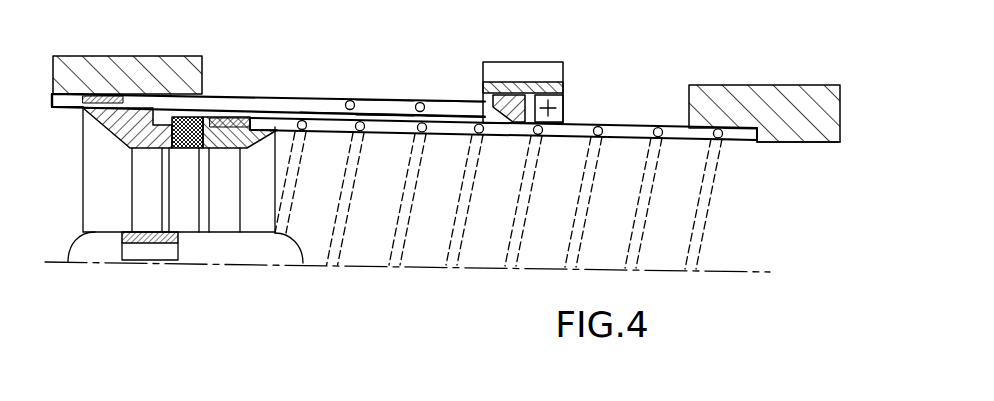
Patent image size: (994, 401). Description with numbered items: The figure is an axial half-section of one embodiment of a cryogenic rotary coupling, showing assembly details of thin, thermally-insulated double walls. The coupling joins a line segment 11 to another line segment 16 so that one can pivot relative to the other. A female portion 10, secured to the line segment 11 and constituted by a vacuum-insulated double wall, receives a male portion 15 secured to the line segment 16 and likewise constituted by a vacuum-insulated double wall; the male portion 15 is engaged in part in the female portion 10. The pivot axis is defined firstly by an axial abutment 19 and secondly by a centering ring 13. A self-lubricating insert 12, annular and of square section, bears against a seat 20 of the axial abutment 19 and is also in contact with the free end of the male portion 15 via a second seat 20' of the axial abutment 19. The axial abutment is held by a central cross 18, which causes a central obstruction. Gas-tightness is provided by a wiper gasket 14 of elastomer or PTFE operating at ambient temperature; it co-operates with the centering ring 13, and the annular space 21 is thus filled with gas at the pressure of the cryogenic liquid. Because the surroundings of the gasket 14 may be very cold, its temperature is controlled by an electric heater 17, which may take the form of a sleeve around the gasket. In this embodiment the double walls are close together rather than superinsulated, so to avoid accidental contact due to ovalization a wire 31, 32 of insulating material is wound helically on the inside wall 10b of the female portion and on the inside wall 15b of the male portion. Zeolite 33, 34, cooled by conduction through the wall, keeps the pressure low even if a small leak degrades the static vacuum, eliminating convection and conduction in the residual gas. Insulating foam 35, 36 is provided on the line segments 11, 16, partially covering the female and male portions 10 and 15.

The female portion 10 is at (302, 97).
The inside wall of the female portion 10b is at (452, 106).
The line segment 11 is at (72, 99).
The self-lubricating insert 12 is at (187, 197).
The centering ring 13 is at (558, 107).
The wiper gasket 14 is at (513, 100).
The male portion 15 is at (637, 125).
The inside wall of the male portion 15b is at (677, 125).
The line segment 16 is at (787, 143).
The electric heater 17 is at (550, 70).
The cross 18 is at (147, 215).
The axial abutment 19 is at (100, 248).
The seat 20 is at (127, 144).
The seat 20' is at (240, 154).
The annular space 21 is at (387, 108).
The wire 31 is at (350, 100).
The wire 32 is at (635, 142).
The zeolite 33 is at (103, 97).
The zeolite 34 is at (230, 117).
The insulating foam 35 is at (138, 55).
The insulating foam 36 is at (787, 95).